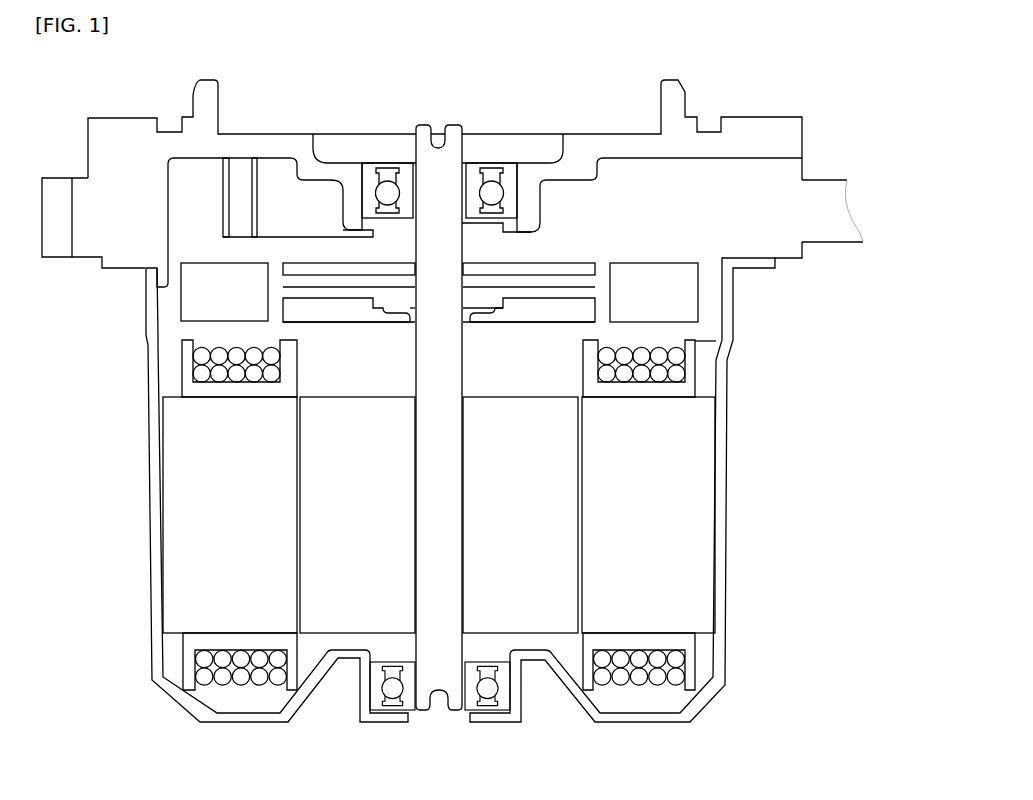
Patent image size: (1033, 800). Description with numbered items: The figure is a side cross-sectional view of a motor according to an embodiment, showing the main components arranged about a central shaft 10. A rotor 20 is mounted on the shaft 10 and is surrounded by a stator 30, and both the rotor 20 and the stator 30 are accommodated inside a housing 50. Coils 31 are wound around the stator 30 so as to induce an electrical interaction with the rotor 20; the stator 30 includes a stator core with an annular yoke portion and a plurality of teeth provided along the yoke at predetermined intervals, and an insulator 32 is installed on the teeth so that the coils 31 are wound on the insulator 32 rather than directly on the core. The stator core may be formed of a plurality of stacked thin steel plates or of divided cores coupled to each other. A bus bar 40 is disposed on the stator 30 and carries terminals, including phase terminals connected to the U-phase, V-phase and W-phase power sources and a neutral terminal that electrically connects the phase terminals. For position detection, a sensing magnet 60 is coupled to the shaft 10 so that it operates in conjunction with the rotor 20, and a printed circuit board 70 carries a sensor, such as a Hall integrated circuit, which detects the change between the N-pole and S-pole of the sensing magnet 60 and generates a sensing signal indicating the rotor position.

The shaft 10 is at (435, 588).
The rotor 20 is at (517, 482).
The stator 30 is at (665, 447).
The coils 31 is at (678, 370).
The insulator 32 is at (690, 395).
The bus bar 40 is at (705, 316).
The housing 50 is at (152, 497).
The sensing magnet 60 is at (275, 305).
The printed circuit board 70 is at (275, 263).